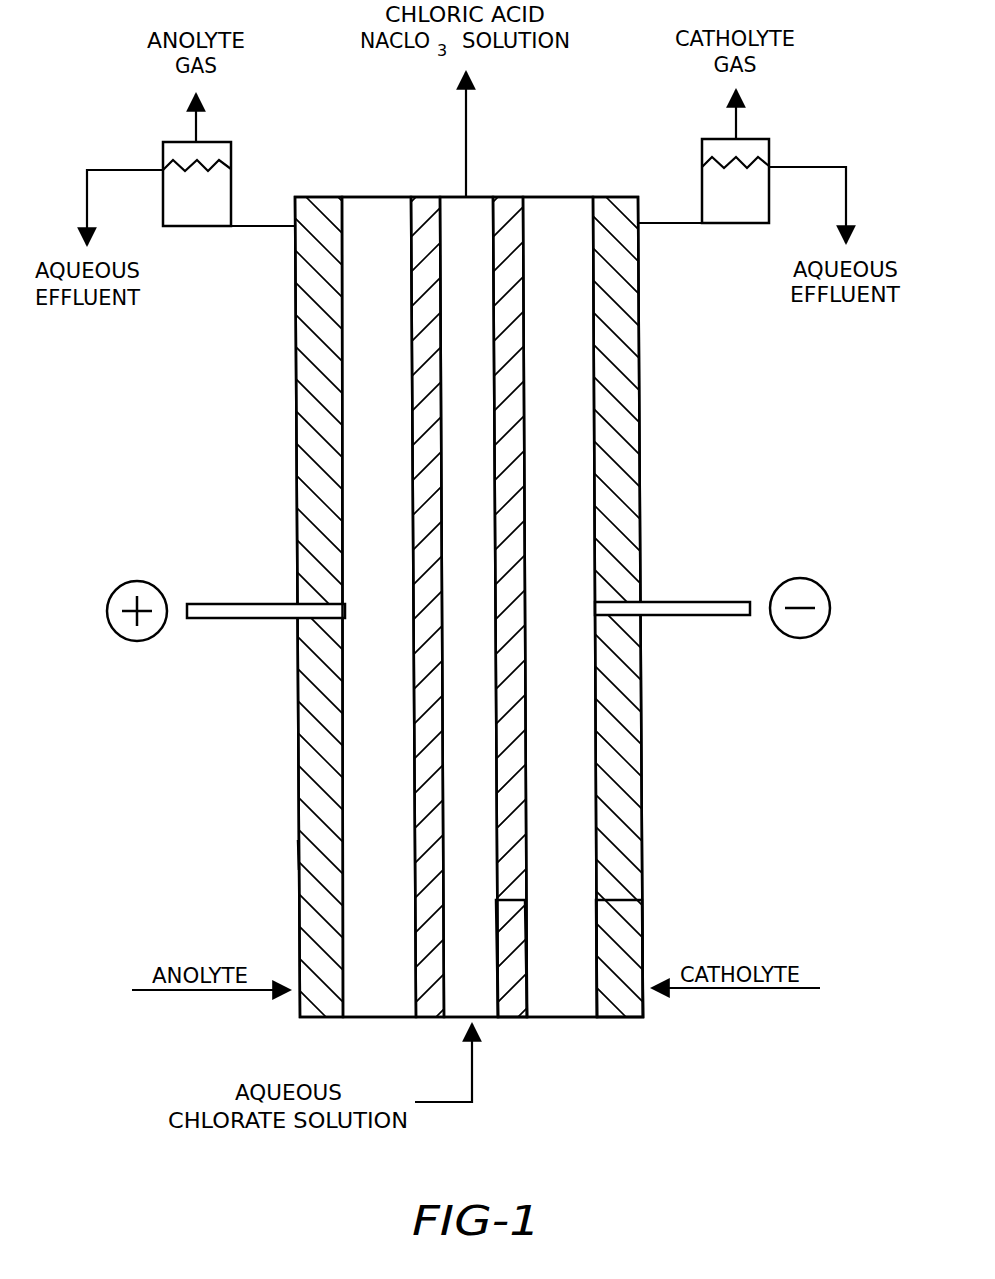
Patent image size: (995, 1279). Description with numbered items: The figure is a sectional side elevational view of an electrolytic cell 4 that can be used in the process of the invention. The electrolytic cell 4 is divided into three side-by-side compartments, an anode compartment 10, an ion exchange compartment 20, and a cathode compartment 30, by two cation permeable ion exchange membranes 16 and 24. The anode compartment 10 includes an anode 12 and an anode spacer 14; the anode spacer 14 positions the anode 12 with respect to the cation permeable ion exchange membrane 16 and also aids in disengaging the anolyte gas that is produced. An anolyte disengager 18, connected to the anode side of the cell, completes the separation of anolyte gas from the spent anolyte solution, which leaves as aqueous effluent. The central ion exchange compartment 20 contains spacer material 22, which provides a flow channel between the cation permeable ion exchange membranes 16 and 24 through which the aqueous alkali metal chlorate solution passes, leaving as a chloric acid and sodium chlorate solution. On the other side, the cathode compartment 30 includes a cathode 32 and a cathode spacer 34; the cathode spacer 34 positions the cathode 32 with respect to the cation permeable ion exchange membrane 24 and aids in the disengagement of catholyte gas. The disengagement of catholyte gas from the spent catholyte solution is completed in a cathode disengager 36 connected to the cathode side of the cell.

The electrolytic cell 4 is at (287, 855).
The anode compartment 10 is at (341, 190).
The anode 12 is at (387, 993).
The anode spacer 14 is at (308, 507).
The cation permeable ion exchange membrane 16 is at (426, 212).
The anolyte disengager 18 is at (199, 213).
The ion exchange compartment 20 is at (487, 678).
The spacer material 22 is at (477, 217).
The cation permeable ion exchange membrane 24 is at (510, 998).
The cathode compartment 30 is at (598, 1028).
The cathode 32 is at (558, 213).
The cathode spacer 34 is at (622, 756).
The cathode disengager 36 is at (740, 208).